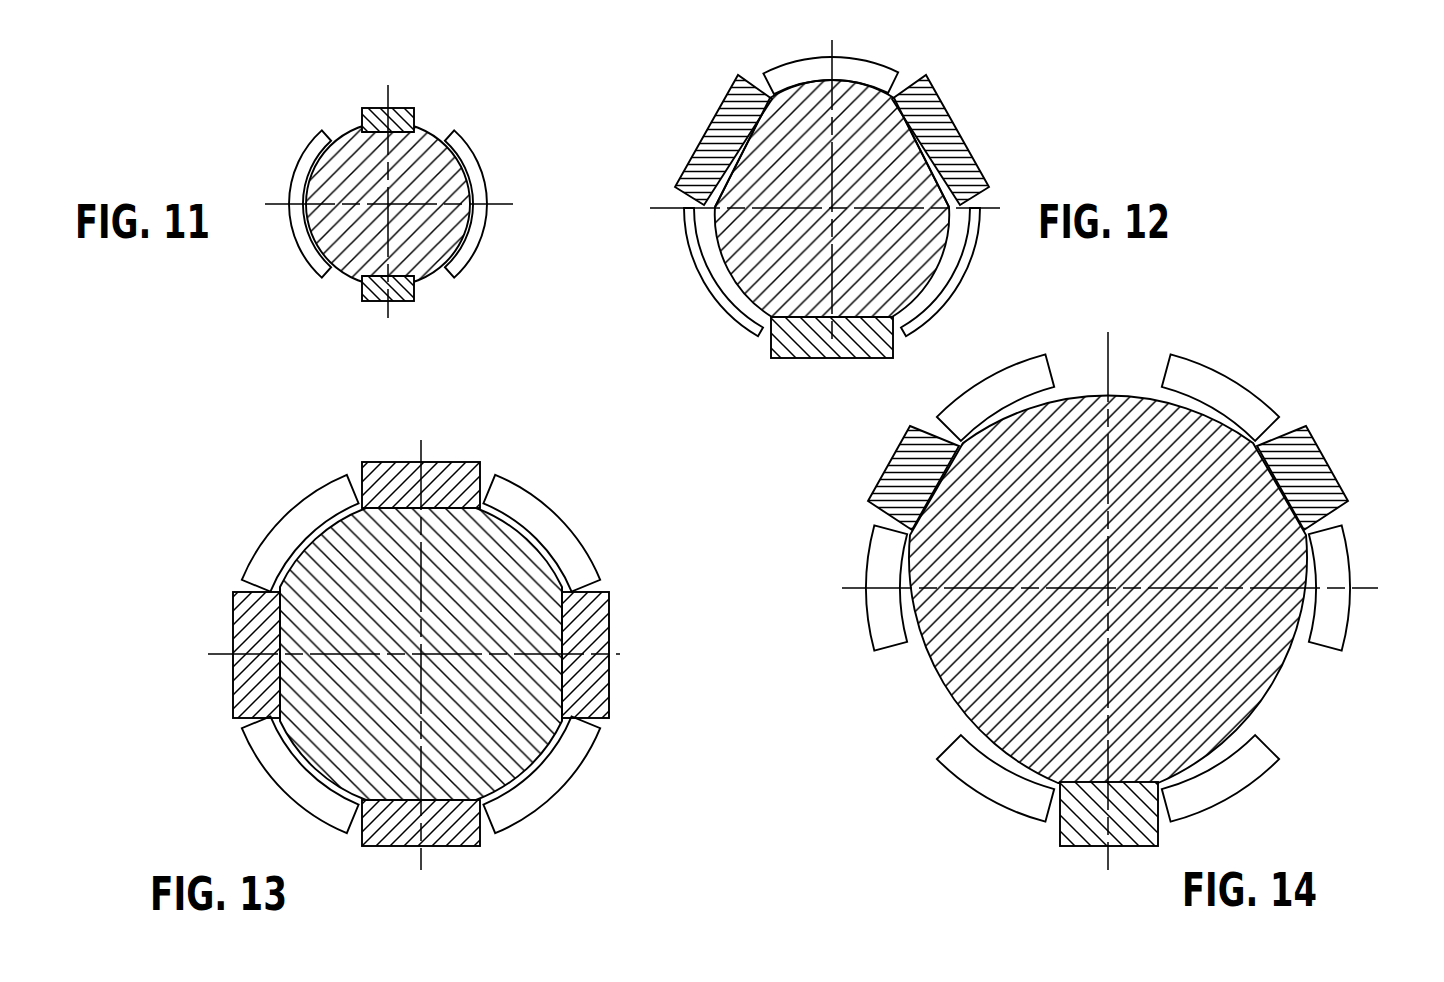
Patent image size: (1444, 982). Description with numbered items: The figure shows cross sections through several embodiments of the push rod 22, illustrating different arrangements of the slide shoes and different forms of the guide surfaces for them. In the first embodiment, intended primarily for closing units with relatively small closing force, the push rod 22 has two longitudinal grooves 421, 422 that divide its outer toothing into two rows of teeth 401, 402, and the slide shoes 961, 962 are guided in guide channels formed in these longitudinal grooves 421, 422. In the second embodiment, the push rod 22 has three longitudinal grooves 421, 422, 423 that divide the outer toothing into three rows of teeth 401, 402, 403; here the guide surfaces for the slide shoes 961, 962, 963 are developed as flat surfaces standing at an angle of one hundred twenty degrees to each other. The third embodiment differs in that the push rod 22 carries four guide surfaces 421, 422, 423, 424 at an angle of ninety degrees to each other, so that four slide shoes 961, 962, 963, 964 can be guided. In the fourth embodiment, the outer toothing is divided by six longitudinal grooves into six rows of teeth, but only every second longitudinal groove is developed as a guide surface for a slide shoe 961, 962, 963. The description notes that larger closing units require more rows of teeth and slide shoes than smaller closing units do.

In FIG. 11, the push rod 22 is at (322, 236).
In FIG. 12, the push rod 22 is at (752, 282).
In FIG. 13, the push rod 22 is at (320, 753).
In FIG. 14, the push rod 22 is at (958, 676).
In FIG. 11, the row of teeth 401 is at (282, 151).
In FIG. 12, the row of teeth 401 is at (887, 51).
In FIG. 11, the row of teeth 402 is at (495, 151).
In FIG. 12, the row of teeth 402 is at (996, 262).
In FIG. 12, the row of teeth 403 is at (670, 263).
In FIG. 11, the longitudinal groove 421 is at (331, 115).
In FIG. 12, the longitudinal groove 421 is at (723, 123).
In FIG. 13, the longitudinal groove 421 is at (262, 691).
In FIG. 11, the longitudinal groove 422 is at (434, 278).
In FIG. 12, the longitudinal groove 422 is at (940, 123).
In FIG. 13, the longitudinal groove 422 is at (460, 489).
In FIG. 12, the longitudinal groove 423 is at (815, 343).
In FIG. 13, the longitudinal groove 423 is at (580, 691).
In FIG. 13, the guide surface 424 is at (462, 825).
In FIG. 11, the slide shoe 961 is at (398, 112).
In FIG. 12, the slide shoe 961 is at (710, 152).
In FIG. 13, the slide shoe 961 is at (248, 627).
In FIG. 14, the slide shoe 961 is at (916, 470).
In FIG. 11, the slide shoe 962 is at (368, 297).
In FIG. 12, the slide shoe 962 is at (960, 152).
In FIG. 13, the slide shoe 962 is at (400, 470).
In FIG. 14, the slide shoe 962 is at (1303, 468).
In FIG. 12, the slide shoe 963 is at (788, 347).
In FIG. 13, the slide shoe 963 is at (594, 627).
In FIG. 14, the slide shoe 963 is at (1080, 832).
In FIG. 13, the slide shoe 964 is at (400, 840).